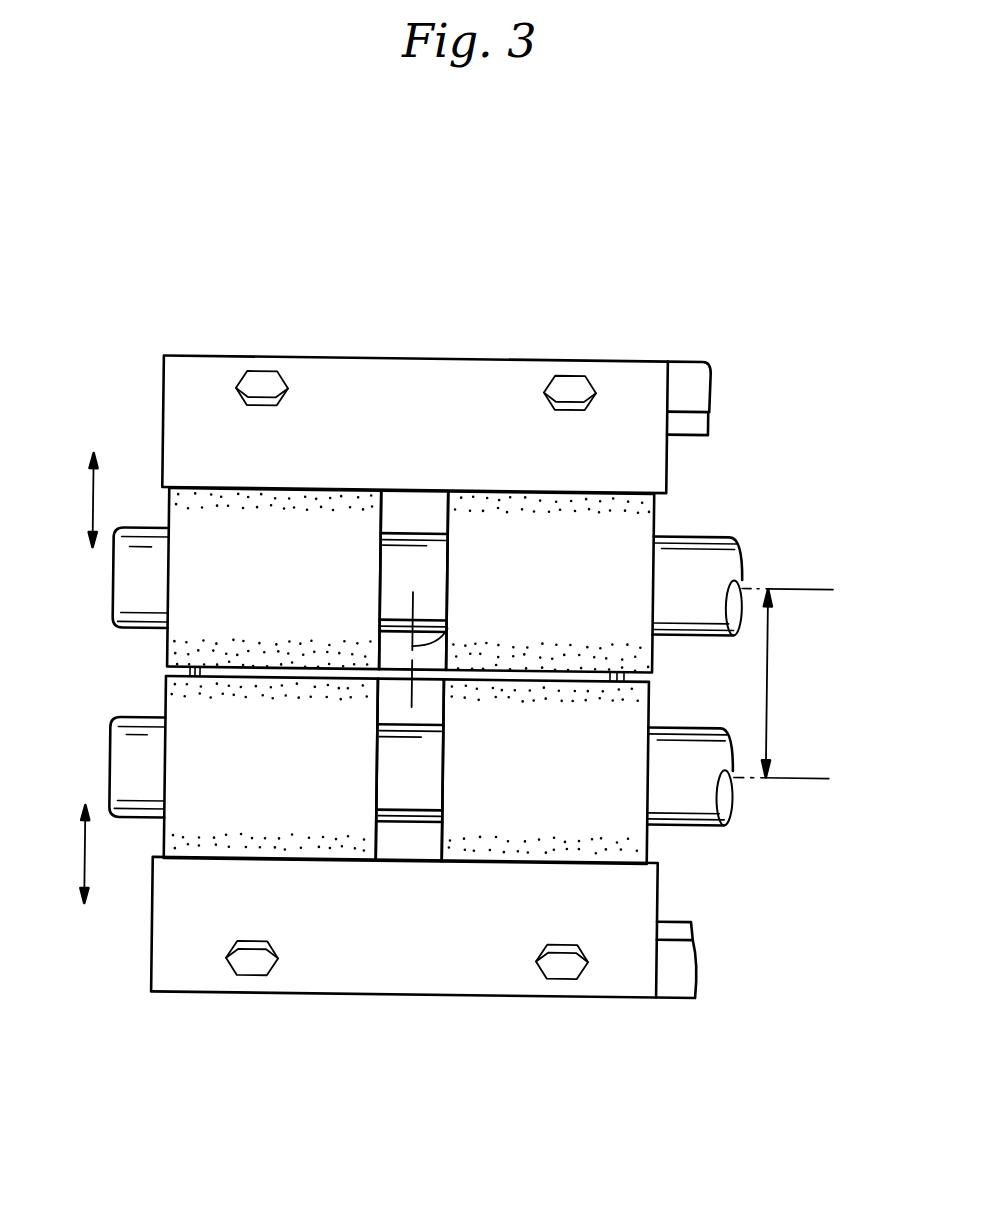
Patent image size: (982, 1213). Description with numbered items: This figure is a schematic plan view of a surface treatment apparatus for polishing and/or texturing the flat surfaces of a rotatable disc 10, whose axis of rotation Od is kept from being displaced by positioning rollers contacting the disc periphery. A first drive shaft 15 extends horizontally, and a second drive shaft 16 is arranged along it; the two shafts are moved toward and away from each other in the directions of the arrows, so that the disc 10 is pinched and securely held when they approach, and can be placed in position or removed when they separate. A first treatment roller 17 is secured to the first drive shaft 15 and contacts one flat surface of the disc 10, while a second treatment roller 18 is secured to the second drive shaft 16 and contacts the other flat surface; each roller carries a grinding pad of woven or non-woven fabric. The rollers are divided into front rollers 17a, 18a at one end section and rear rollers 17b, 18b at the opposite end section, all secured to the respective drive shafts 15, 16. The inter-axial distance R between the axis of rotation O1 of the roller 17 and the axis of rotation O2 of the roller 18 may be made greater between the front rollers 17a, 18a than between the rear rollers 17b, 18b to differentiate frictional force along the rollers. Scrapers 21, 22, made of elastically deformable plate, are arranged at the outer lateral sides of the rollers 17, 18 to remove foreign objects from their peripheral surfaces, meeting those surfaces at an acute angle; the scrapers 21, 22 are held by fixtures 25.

The rotatable disc 10 is at (284, 672).
The first drive shaft 15 is at (129, 594).
The second drive shaft 16 is at (128, 753).
The first treatment roller 17 is at (403, 508).
The front roller 17a is at (292, 513).
The rear roller 17b is at (529, 520).
The second treatment roller 18 is at (407, 846).
The front roller 18a is at (249, 832).
The rear roller 18b is at (528, 833).
The scraper 21 is at (644, 454).
The scraper 22 is at (419, 975).
The fixture 25 is at (697, 384).
The axis of rotation of the disc Od is at (452, 623).
The axis of rotation of the first treatment roller O1 is at (811, 589).
The axis of rotation of the second treatment roller O2 is at (803, 789).
The inter-axial distance R is at (769, 682).